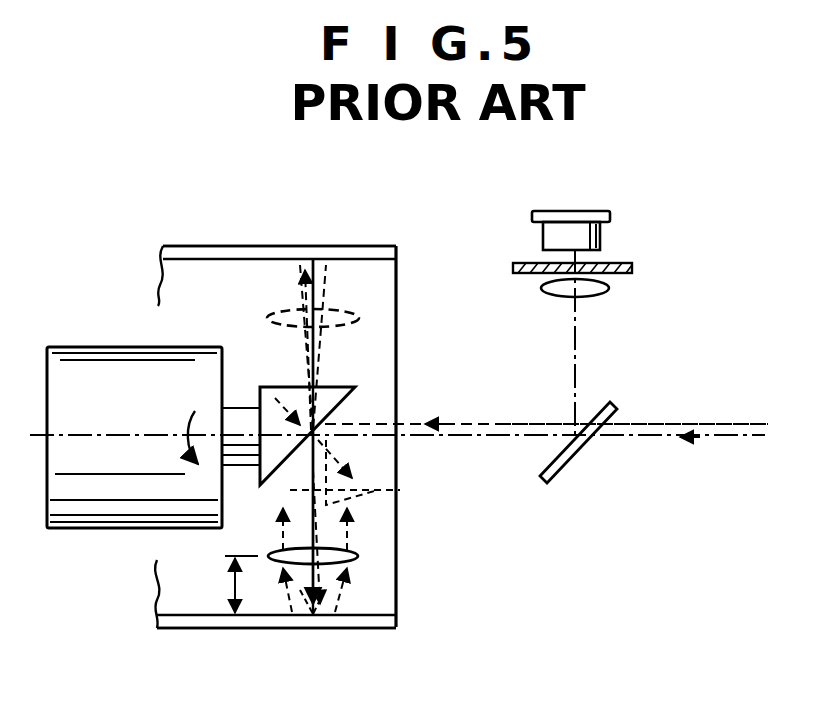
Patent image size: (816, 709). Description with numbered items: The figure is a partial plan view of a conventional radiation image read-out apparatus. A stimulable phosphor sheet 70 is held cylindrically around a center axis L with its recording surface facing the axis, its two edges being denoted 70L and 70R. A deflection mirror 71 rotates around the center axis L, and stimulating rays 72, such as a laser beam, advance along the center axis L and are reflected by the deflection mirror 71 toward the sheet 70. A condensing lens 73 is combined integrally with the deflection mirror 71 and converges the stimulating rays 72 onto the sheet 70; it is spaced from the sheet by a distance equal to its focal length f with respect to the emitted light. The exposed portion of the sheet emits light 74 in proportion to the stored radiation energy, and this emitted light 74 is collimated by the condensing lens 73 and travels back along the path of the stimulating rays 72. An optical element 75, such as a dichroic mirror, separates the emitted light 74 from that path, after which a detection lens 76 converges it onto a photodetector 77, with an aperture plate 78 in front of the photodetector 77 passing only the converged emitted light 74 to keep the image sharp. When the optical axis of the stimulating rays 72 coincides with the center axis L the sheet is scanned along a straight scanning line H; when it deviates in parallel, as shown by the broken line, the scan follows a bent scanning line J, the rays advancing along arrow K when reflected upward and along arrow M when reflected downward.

The stimulable phosphor sheet 70 is at (380, 603).
The edge of the stimulable phosphor sheet 70L is at (213, 252).
The edge of the stimulable phosphor sheet 70R is at (196, 628).
The deflection mirror 71 is at (348, 400).
The stimulating rays 72 is at (714, 424).
The condensing lens 73 is at (358, 556).
The emitted light 74 is at (290, 600).
The optical element 75 is at (562, 466).
The detection lens 76 is at (607, 290).
The photodetector 77 is at (600, 236).
The aperture plate 78 is at (632, 266).
The center axis L is at (134, 430).
The arrow indicating direction of reflected rays K is at (300, 343).
The straight scanning line H is at (318, 292).
The bent scanning line J is at (322, 530).
The arrow indicating direction of reflected rays M is at (400, 490).
The focal length f is at (236, 584).